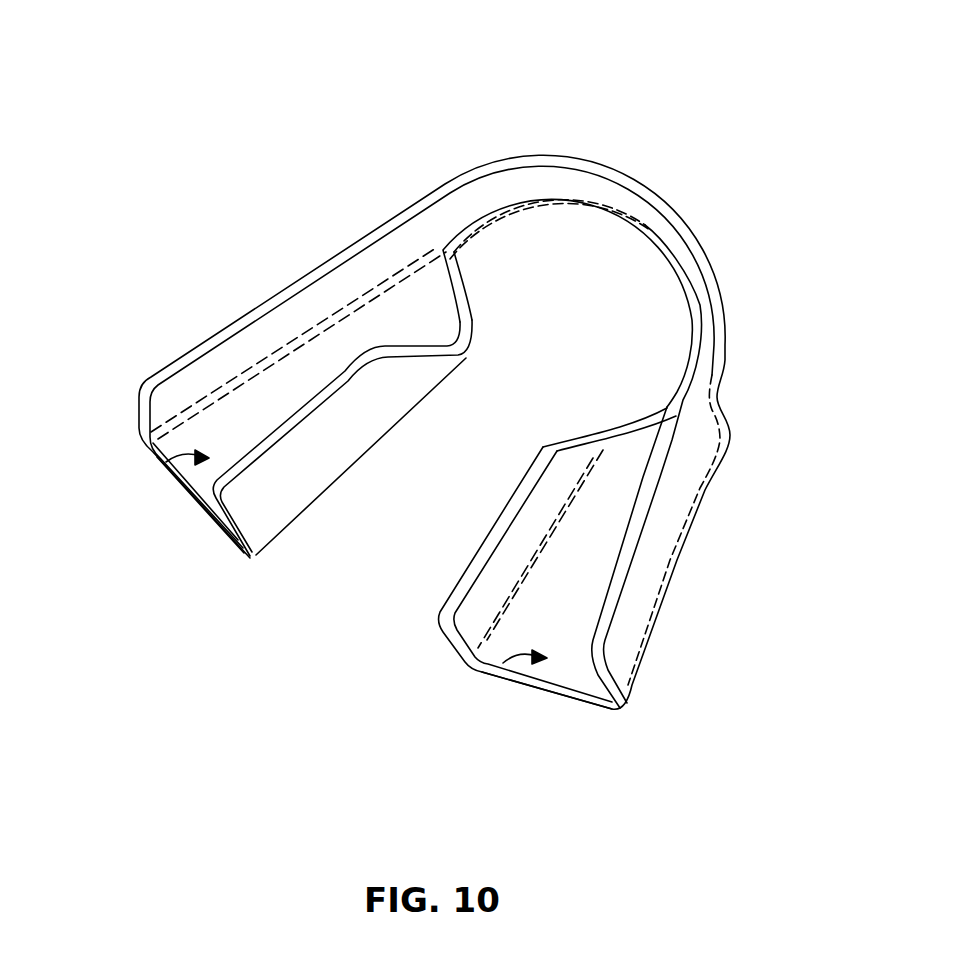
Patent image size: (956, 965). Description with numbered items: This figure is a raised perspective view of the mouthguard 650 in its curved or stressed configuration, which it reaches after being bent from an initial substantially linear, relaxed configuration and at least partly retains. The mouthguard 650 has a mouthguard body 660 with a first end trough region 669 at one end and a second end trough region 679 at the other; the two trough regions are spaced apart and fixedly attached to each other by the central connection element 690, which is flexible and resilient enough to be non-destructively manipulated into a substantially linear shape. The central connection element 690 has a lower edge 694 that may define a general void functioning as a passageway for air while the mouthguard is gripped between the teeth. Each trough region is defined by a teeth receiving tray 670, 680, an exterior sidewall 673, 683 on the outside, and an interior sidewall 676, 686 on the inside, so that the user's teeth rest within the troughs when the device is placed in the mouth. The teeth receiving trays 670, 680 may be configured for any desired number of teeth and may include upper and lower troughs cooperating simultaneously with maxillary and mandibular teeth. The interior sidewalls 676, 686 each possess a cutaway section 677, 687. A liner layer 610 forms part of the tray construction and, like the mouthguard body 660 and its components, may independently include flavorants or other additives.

The mouthguard 650 is at (492, 126).
The mouthguard body 660 is at (662, 194).
The liner layer 610 is at (365, 330).
The exterior sidewall 673 is at (218, 372).
The lower edge 694 is at (515, 197).
The central connection element 690 is at (705, 292).
The cutaway section 677 is at (397, 355).
The interior sidewall 676 is at (283, 489).
The first end trough region 669 is at (168, 458).
The teeth receiving tray 670 is at (193, 496).
The cutaway section 687 is at (603, 430).
The exterior sidewall 683 is at (675, 513).
The interior sidewall 686 is at (486, 598).
The second end trough region 679 is at (500, 672).
The teeth receiving tray 680 is at (568, 692).